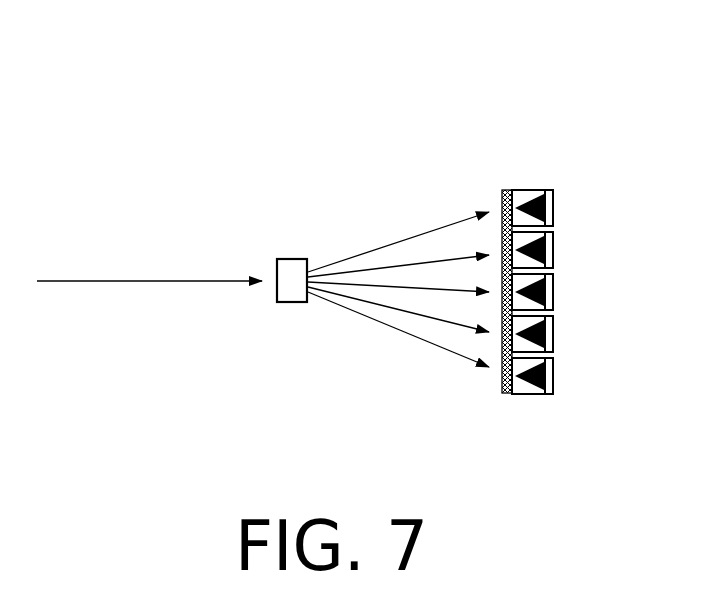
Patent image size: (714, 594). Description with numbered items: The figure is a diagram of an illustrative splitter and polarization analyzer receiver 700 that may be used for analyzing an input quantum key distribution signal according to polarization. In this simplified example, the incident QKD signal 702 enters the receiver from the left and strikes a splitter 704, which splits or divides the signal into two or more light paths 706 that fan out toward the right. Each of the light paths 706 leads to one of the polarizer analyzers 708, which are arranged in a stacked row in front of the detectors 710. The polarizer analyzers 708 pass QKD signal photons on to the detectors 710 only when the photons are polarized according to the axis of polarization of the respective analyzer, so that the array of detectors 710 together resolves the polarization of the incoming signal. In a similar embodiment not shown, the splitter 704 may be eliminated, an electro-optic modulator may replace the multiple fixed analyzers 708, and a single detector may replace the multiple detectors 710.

The receiver 700 is at (288, 110).
The incident QKD signal 702 is at (188, 284).
The splitter 704 is at (281, 258).
The light paths 706 is at (366, 342).
The polarizer analyzers 708 is at (506, 170).
The detectors 710 is at (553, 202).